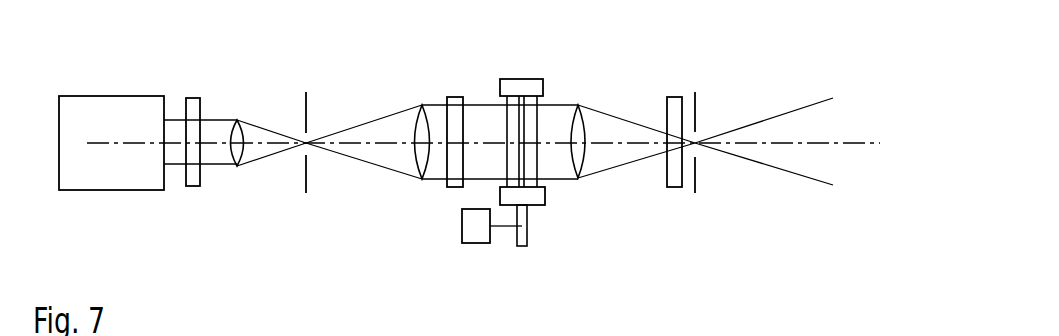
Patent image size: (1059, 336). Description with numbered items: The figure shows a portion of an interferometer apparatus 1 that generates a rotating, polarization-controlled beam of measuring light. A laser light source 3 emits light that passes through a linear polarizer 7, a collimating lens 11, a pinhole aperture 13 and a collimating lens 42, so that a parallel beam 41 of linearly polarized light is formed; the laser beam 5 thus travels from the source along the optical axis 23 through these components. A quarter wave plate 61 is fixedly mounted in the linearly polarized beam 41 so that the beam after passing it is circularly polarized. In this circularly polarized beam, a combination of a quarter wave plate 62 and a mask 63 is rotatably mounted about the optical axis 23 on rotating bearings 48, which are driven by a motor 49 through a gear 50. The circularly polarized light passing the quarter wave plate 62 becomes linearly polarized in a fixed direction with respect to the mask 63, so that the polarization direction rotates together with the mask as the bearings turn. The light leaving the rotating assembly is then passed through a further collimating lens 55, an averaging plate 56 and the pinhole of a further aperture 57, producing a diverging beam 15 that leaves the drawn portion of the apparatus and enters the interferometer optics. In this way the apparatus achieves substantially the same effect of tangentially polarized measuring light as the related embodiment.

The interferometer apparatus 1 is at (342, 242).
The laser light source 3 is at (110, 96).
The laser beam 5 is at (220, 120).
The linear polarizer 7 is at (193, 187).
The collimating lens 11 is at (238, 120).
The pinhole aperture 13 is at (308, 110).
The diverging beam 15 is at (783, 113).
The optical axis 23 is at (863, 138).
The parallel beam 41 is at (437, 182).
The collimating lens 42 is at (428, 125).
The rotating bearings 48 is at (515, 79).
The motor 49 is at (475, 243).
The gear 50 is at (520, 246).
The further collimating lens 55 is at (580, 105).
The averaging plate 56 is at (673, 187).
The further aperture 57 is at (696, 108).
The quarter wave plate 61 is at (453, 97).
The quarter wave plate 62 is at (505, 118).
The mask 63 is at (538, 118).